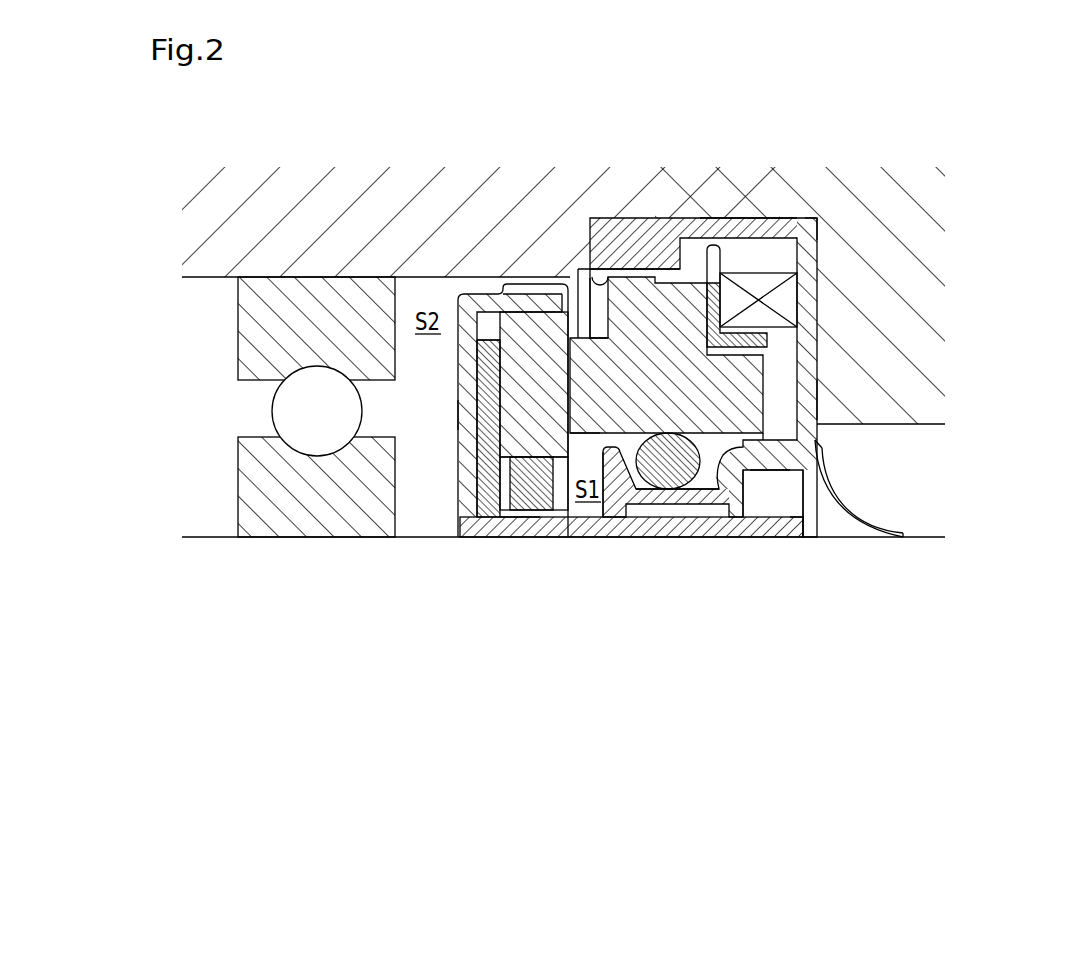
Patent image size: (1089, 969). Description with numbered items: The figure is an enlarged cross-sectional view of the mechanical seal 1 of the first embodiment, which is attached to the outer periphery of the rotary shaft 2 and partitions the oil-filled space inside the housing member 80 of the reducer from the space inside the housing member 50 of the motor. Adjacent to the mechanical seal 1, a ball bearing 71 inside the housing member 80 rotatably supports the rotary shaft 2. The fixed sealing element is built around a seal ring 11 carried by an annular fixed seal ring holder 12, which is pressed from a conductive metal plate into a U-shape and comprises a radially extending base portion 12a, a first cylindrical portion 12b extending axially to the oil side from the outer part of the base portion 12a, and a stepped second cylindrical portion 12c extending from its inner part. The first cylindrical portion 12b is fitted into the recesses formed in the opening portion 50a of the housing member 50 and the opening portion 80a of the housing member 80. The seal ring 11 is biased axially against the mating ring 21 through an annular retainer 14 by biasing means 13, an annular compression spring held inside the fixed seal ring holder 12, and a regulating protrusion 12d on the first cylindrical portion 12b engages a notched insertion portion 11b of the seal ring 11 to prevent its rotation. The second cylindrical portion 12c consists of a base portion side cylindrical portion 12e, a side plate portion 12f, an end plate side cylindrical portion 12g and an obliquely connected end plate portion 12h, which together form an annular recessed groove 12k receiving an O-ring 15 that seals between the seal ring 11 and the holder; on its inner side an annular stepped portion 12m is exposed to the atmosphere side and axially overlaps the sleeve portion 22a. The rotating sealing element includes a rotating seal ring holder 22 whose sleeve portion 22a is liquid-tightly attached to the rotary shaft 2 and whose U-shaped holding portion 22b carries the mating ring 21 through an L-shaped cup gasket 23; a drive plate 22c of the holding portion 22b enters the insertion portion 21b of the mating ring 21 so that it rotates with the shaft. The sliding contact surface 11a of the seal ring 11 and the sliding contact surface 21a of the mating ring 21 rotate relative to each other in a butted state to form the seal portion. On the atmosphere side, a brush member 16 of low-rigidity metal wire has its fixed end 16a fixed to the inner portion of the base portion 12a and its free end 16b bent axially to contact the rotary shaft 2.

The mechanical seal 1 is at (822, 257).
The rotary shaft 2 is at (930, 532).
The seal ring 11 is at (690, 270).
The sliding contact surface 11a is at (507, 518).
The insertion portion 11b is at (712, 245).
The fixed seal ring holder 12 is at (822, 367).
The base portion 12a is at (820, 400).
The first cylindrical portion 12b is at (755, 217).
The second cylindrical portion 12c is at (800, 640).
The regulating protrusion 12d is at (580, 278).
The base portion side cylindrical portion 12e is at (757, 472).
The side plate portion 12f is at (735, 507).
The end plate side cylindrical portion 12g is at (690, 507).
The end plate portion 12h is at (612, 512).
The annular recessed groove 12k is at (684, 494).
The annular stepped portion 12m is at (786, 482).
The biasing means 13 is at (786, 302).
The retainer 14 is at (767, 345).
The O-ring 15 is at (466, 418).
The brush member 16 is at (850, 540).
The fixed end 16a is at (820, 452).
The free end 16b is at (898, 536).
The mating ring 21 is at (493, 320).
The sliding contact surface 21a is at (531, 470).
The insertion portion 21b is at (512, 290).
The rotating seal ring holder 22 is at (466, 542).
The sleeve portion 22a is at (795, 525).
The holding portion 22b is at (522, 512).
The drive plate 22c is at (458, 356).
The cup gasket 23 is at (470, 448).
The housing member 50 is at (912, 430).
The opening portion 50a is at (805, 217).
The ball bearing 71 is at (290, 290).
The housing member 80 is at (212, 283).
The opening portion 80a is at (655, 262).